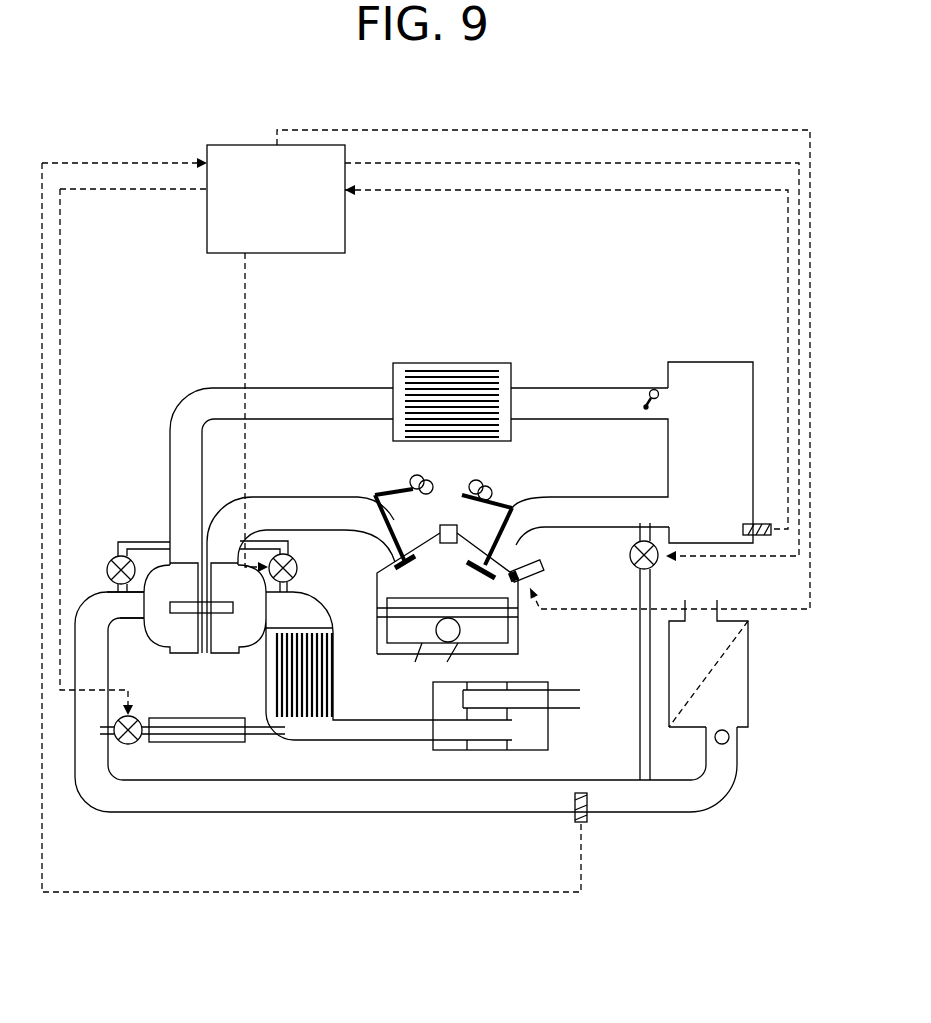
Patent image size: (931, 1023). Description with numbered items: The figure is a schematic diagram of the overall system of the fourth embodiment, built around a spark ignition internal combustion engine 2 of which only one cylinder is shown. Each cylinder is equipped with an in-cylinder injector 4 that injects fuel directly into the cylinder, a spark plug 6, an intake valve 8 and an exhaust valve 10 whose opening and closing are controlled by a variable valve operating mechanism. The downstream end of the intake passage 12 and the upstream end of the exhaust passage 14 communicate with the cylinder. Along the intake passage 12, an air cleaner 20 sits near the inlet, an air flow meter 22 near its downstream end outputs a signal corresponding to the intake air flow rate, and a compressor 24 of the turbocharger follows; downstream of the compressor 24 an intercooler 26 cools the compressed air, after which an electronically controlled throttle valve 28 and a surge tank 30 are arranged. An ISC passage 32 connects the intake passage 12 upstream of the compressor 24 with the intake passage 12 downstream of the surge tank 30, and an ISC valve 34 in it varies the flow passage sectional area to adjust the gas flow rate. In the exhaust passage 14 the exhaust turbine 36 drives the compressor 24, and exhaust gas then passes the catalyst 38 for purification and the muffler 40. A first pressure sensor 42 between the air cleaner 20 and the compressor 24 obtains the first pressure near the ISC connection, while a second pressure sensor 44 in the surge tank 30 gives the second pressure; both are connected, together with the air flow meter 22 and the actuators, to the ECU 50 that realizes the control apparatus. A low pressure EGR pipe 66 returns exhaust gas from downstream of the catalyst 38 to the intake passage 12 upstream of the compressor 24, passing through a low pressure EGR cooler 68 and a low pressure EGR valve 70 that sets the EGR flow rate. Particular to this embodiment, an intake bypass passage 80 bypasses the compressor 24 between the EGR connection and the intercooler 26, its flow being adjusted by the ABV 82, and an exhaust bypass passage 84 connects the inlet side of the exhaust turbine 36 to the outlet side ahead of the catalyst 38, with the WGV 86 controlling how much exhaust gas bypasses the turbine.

The internal combustion engine 2 is at (527, 632).
The in-cylinder injector 4 is at (545, 567).
The spark plug 6 is at (458, 531).
The intake valve 8 is at (502, 535).
The exhaust valve 10 is at (397, 527).
The intake passage 12 is at (325, 387).
The exhaust passage 14 is at (343, 533).
The air cleaner 20 is at (745, 675).
The air flow meter 22 is at (730, 738).
The compressor 24 is at (165, 642).
The intercooler 26 is at (453, 368).
The throttle valve 28 is at (652, 385).
The surge tank 30 is at (712, 362).
The ISC passage 32 is at (651, 583).
The ISC valve 34 is at (640, 565).
The exhaust turbine 36 is at (224, 640).
The catalyst 38 is at (327, 678).
The muffler 40 is at (542, 733).
The first pressure sensor 42 is at (590, 815).
The second pressure sensor 44 is at (762, 523).
The ECU 50 is at (240, 145).
The low pressure EGR pipe 66 is at (265, 735).
The low pressure EGR cooler 68 is at (203, 718).
The low pressure EGR valve 70 is at (128, 744).
The intake bypass passage 80 is at (148, 542).
The ABV 82 is at (110, 560).
The exhaust bypass passage 84 is at (263, 540).
The WGV 86 is at (298, 568).